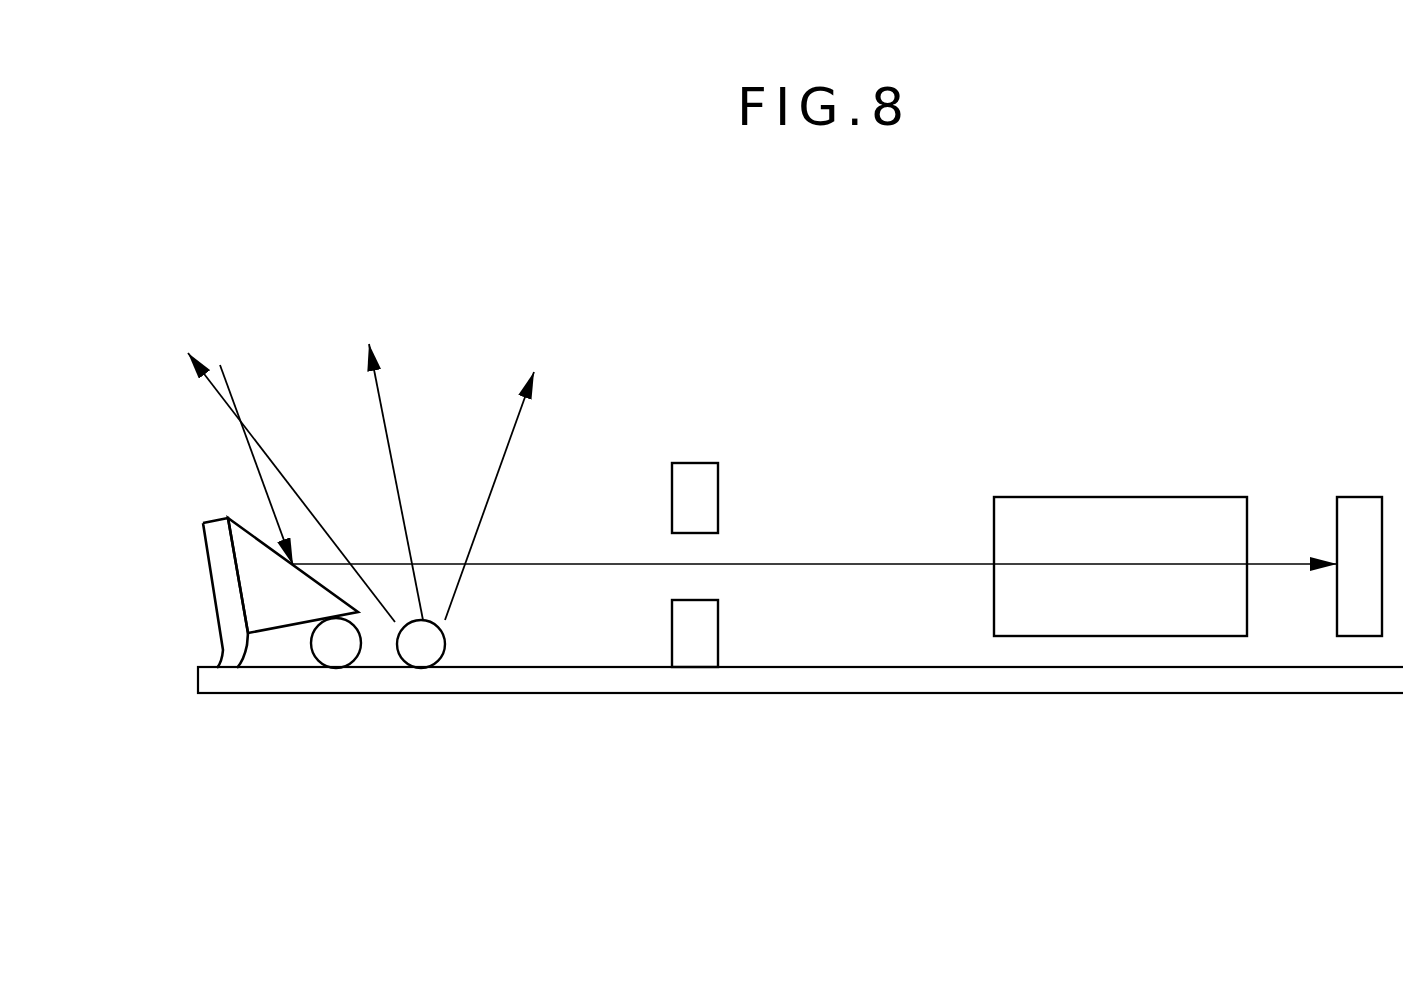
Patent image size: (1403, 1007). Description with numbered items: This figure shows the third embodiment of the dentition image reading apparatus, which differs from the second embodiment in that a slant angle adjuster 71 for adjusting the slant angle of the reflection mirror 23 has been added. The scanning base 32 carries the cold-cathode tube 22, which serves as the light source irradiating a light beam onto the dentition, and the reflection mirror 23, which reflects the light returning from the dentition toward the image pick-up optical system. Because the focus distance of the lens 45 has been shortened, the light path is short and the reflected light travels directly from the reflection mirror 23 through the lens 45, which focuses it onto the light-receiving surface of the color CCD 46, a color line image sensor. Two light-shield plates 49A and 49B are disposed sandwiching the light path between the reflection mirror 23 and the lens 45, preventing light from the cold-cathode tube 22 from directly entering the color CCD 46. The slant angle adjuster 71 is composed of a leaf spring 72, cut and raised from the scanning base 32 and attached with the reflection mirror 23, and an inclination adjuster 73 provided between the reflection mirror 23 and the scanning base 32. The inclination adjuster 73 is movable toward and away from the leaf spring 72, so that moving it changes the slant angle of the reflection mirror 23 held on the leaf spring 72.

The cold-cathode tube 22 is at (425, 653).
The reflection mirror 23 is at (255, 573).
The scanning base 32 is at (910, 688).
The lens 45 is at (1100, 503).
The color CCD 46 is at (1355, 498).
The light-shield plate 49A is at (718, 488).
The light-shield plate 49B is at (718, 630).
The slant angle adjuster 71 is at (267, 688).
The leaf spring 72 is at (220, 625).
The inclination adjuster 73 is at (337, 655).